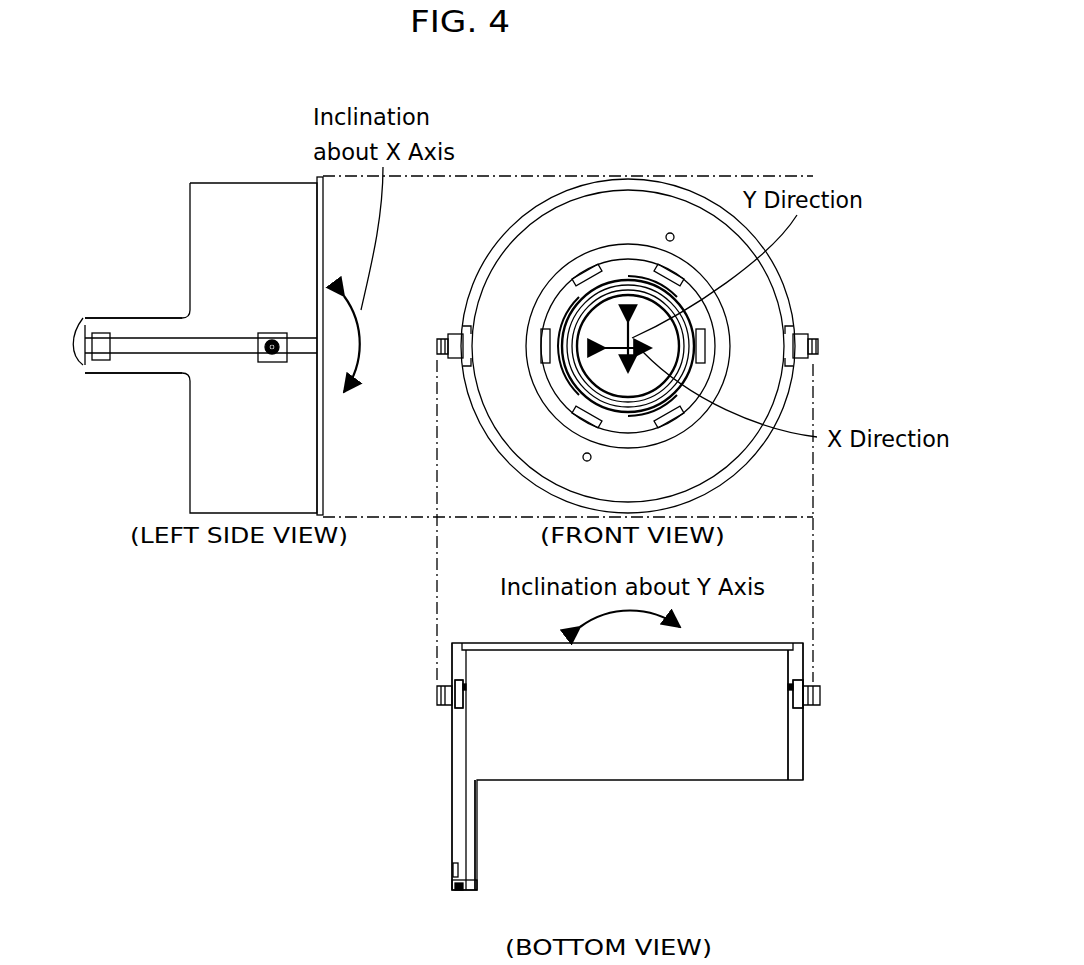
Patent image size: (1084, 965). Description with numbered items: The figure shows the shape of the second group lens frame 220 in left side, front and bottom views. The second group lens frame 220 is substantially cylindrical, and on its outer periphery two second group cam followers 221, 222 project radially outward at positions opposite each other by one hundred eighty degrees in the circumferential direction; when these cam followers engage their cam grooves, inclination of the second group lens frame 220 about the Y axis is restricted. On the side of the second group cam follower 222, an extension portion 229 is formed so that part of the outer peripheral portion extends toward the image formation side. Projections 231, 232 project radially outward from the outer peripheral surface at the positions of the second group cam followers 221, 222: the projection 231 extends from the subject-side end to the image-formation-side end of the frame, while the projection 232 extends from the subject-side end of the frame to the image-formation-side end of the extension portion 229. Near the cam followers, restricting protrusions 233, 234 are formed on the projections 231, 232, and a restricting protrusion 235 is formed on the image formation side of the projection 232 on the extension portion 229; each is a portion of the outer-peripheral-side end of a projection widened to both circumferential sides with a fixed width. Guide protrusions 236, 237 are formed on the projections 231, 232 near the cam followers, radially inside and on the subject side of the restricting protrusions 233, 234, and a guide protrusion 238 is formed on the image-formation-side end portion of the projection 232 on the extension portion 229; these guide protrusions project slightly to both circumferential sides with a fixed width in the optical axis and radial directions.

The second group lens frame 220 is at (190, 152).
The second group cam follower 221 is at (820, 344).
The second group cam follower 222 is at (437, 345).
The extension portion 229 is at (147, 360).
The projection 231 is at (797, 753).
The projection 232 is at (137, 345).
The restricting protrusion 233 is at (801, 334).
The restricting protrusion 234 is at (268, 336).
The restricting protrusion 235 is at (103, 360).
The guide protrusion 236 is at (793, 686).
The guide protrusion 237 is at (463, 686).
The guide protrusion 238 is at (80, 320).